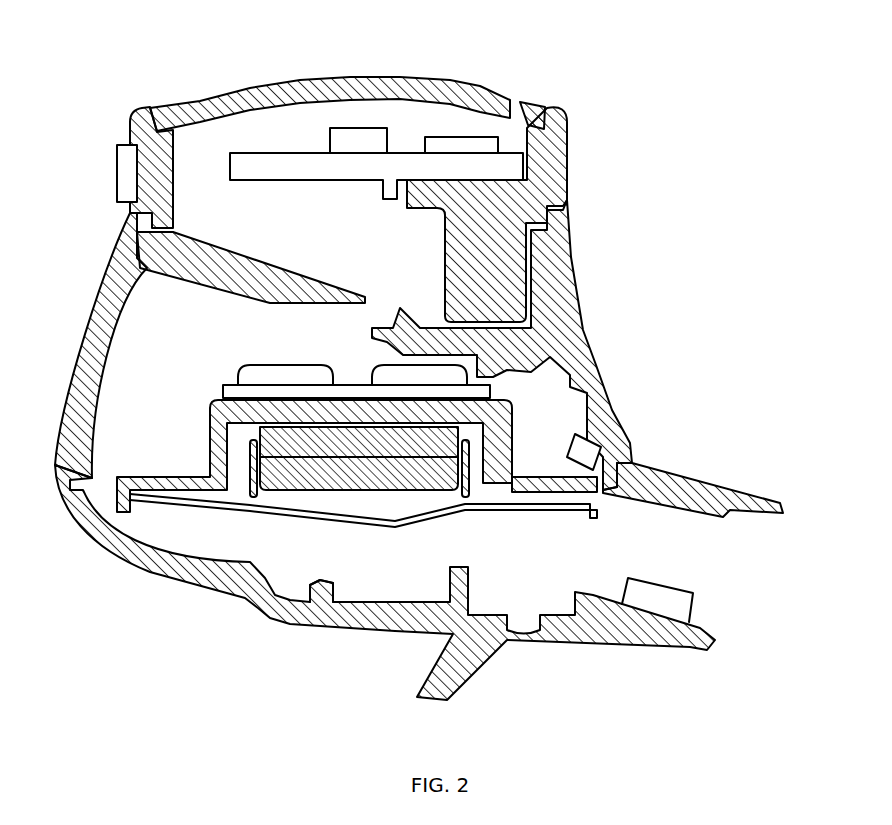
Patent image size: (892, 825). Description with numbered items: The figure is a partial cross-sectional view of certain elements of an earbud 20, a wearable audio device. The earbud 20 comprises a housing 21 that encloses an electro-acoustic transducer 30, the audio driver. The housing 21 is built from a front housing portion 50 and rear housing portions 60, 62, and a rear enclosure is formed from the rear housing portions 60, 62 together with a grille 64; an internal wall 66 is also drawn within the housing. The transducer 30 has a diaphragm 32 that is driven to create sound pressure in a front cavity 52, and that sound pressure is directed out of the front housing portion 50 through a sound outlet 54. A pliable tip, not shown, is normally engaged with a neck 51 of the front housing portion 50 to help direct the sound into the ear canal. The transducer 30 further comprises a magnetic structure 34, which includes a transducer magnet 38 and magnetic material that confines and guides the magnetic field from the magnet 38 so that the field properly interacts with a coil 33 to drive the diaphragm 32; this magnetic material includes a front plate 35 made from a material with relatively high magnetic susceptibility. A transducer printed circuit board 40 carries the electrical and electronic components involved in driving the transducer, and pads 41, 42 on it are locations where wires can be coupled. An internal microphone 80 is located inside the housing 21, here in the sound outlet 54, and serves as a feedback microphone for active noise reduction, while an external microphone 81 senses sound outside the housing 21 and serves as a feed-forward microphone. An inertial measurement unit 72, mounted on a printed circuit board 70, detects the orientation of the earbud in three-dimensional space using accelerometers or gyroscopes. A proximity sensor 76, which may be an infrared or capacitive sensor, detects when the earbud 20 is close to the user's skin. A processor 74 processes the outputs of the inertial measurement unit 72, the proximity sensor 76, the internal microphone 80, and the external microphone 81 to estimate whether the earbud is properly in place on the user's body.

The earbud 20 is at (175, 630).
The housing 21 is at (620, 412).
The electro-acoustic transducer 30 is at (197, 403).
The diaphragm 32 is at (545, 507).
The coil 33 is at (462, 507).
The magnetic structure 34 is at (185, 460).
The front plate 35 is at (397, 493).
The transducer magnet 38 is at (345, 447).
The transducer printed circuit board 40 is at (223, 387).
The pad 41 is at (272, 373).
The pad 42 is at (382, 373).
The front housing portion 50 is at (400, 631).
The neck 51 is at (705, 487).
The front cavity 52 is at (290, 570).
The sound outlet 54 is at (722, 578).
The rear housing portion 60 is at (97, 323).
The rear housing portion 62 is at (560, 183).
The grille 64 is at (357, 80).
The partition 66 is at (147, 297).
The printed circuit board 70 is at (333, 172).
The inertial measurement unit 72 is at (338, 133).
The processor 74 is at (468, 143).
The proximity sensor 76 is at (583, 448).
The internal microphone 80 is at (660, 602).
The external microphone 81 is at (122, 170).